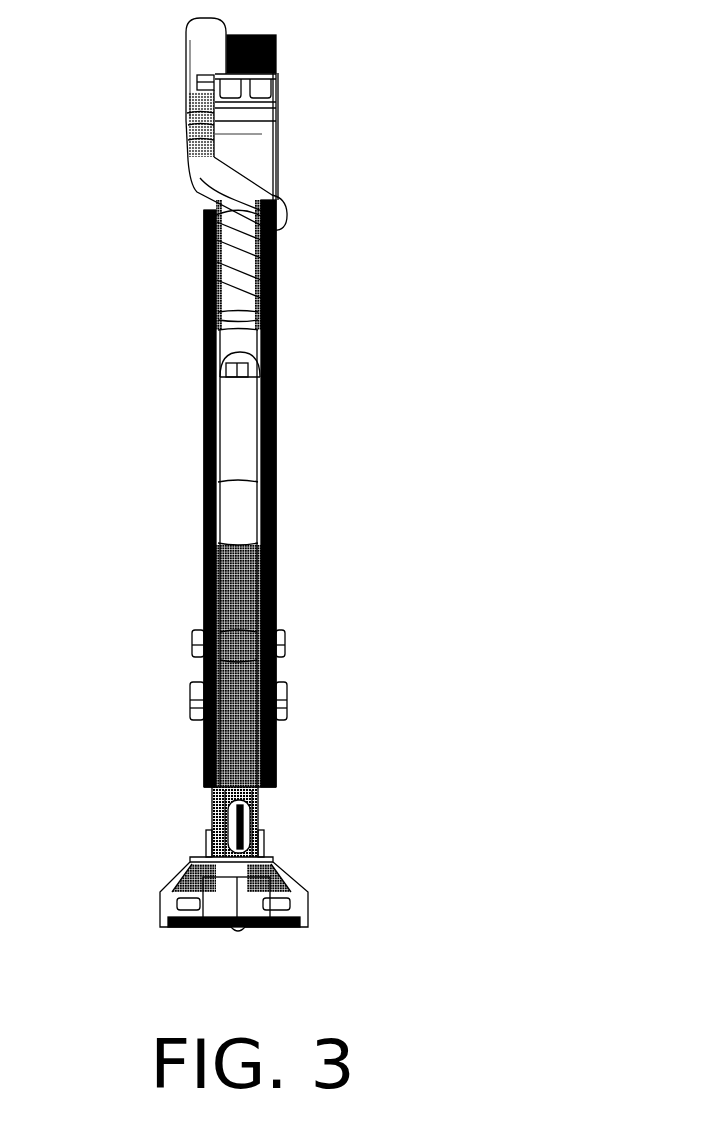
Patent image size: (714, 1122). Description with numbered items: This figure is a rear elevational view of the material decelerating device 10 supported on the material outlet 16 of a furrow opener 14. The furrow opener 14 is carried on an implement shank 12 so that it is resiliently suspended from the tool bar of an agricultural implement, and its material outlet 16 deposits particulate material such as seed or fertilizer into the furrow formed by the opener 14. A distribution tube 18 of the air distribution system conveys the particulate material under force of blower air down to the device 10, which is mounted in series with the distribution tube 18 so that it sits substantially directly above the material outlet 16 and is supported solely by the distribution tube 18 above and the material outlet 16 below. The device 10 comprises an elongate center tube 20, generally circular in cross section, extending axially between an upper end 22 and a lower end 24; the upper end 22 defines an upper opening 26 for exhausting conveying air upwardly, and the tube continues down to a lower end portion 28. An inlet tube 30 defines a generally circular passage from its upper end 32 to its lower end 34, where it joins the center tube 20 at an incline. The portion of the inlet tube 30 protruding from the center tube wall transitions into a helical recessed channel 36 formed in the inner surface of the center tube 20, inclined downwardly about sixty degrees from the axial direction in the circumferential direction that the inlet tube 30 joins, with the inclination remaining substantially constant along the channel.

The material decelerating device 10 is at (352, 218).
The implement shank 12 is at (285, 62).
The furrow opener 14 is at (260, 826).
The material outlet 16 is at (212, 830).
The distribution tube 18 is at (200, 44).
The center tube 20 is at (265, 140).
The upper end 22 is at (318, 120).
The lower end 24 is at (303, 331).
The upper opening 26 is at (300, 90).
The lower end portion 28 is at (260, 355).
The inlet tube 30 is at (190, 155).
The upper end 32 is at (185, 110).
The lower end 34 is at (187, 190).
The helical recessed channel 36 is at (280, 222).